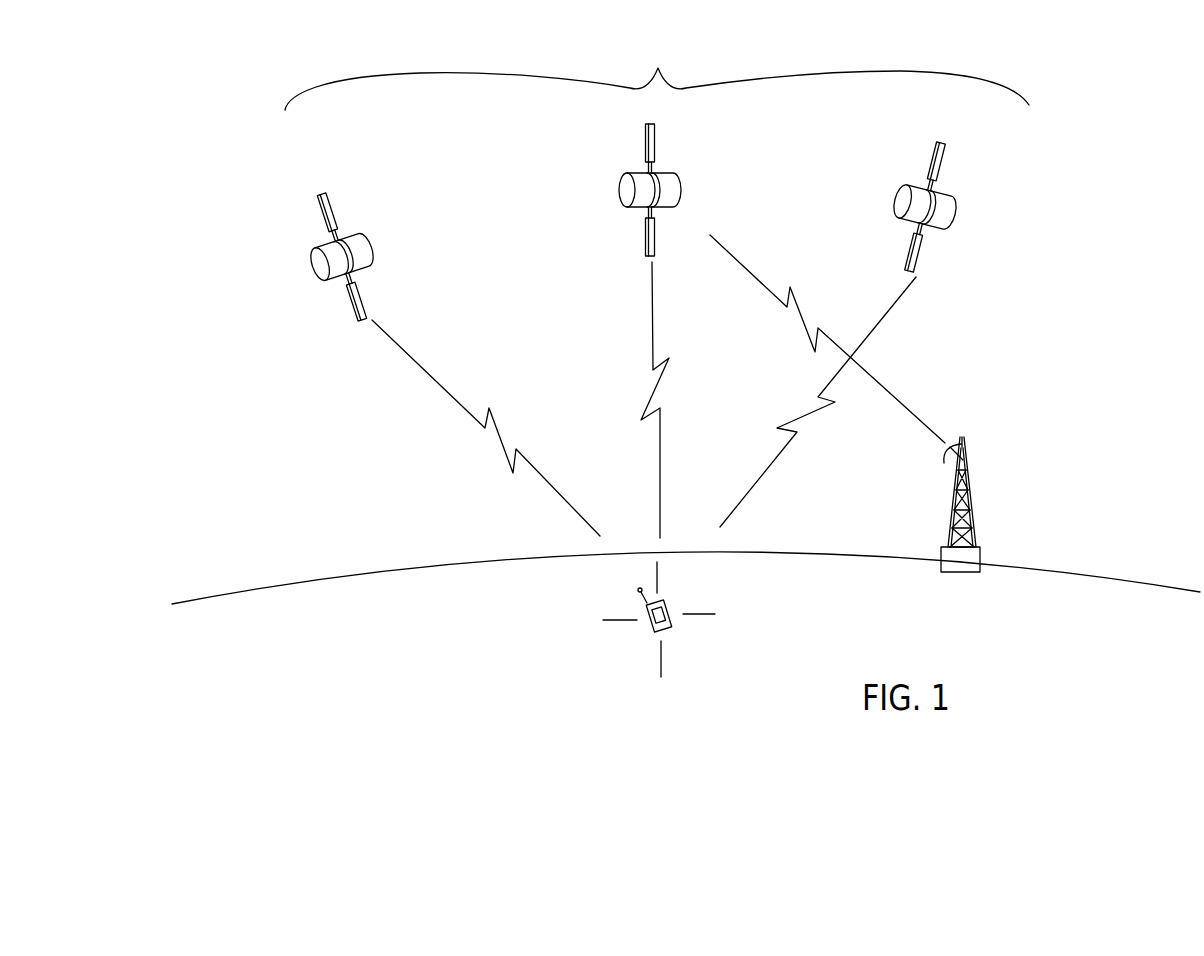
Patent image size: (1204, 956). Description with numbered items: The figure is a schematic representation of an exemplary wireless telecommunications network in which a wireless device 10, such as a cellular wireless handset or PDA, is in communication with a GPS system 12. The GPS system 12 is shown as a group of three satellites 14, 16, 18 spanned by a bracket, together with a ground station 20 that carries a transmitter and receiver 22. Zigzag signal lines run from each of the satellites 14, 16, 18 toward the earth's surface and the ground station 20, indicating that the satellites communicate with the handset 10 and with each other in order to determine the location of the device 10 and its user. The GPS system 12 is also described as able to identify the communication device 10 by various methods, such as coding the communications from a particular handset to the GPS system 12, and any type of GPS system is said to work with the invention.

The wireless device 10 is at (674, 627).
The GPS system 12 is at (657, 74).
The satellite 14 is at (368, 265).
The satellite 16 is at (674, 203).
The satellite 18 is at (947, 225).
The ground station 20 is at (973, 505).
The transmitter and receiver 22 is at (965, 447).